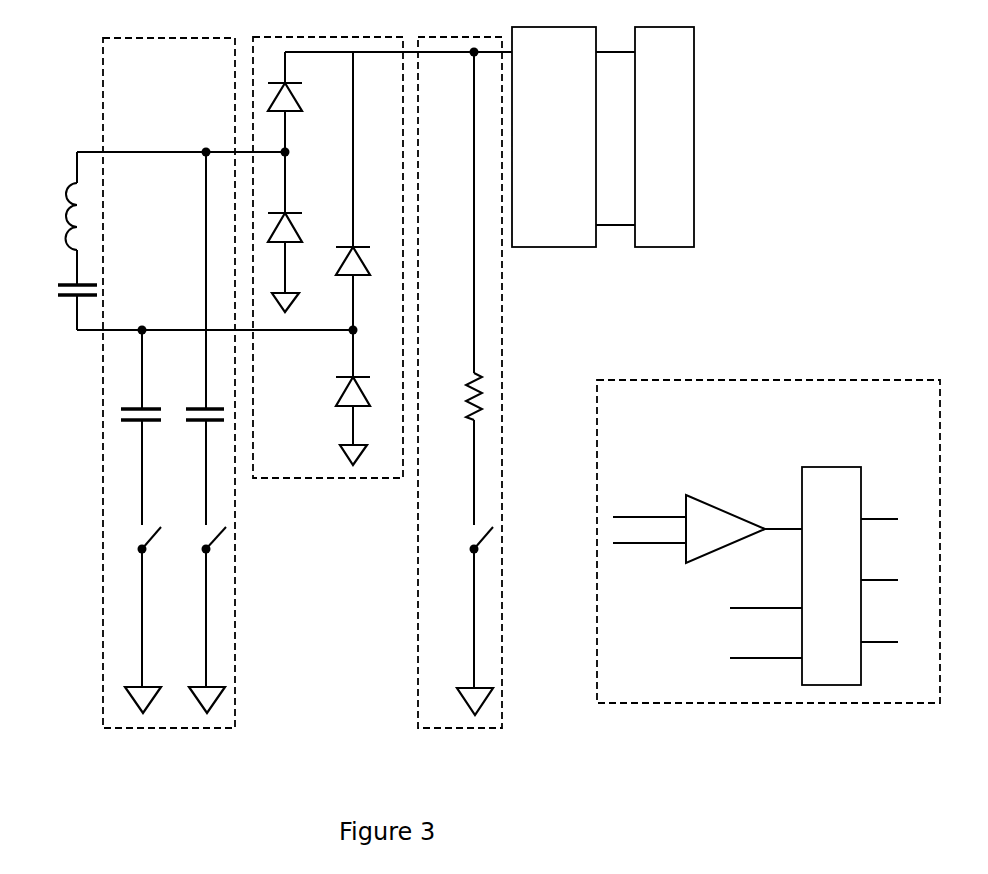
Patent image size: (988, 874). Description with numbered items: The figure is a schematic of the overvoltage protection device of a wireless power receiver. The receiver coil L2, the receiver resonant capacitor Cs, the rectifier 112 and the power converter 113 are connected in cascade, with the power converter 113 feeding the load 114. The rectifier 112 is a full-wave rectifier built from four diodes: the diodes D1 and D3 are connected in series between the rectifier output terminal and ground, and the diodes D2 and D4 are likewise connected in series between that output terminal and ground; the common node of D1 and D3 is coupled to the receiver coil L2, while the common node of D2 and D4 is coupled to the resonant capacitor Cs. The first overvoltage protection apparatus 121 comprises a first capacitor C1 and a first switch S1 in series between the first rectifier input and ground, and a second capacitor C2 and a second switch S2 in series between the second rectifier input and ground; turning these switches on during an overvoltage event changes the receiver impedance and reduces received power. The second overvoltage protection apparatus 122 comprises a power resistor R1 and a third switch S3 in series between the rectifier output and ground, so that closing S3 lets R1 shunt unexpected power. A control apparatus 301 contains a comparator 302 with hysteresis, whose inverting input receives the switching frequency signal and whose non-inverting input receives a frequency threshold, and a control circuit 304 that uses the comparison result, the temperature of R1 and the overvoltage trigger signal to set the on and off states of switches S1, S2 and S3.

The first overvoltage protection apparatus 121 is at (147, 69).
The rectifier 112 is at (299, 475).
The second overvoltage protection apparatus 122 is at (459, 716).
The power converter 113 is at (542, 247).
The load 114 is at (665, 247).
The control apparatus 301 is at (768, 541).
The comparator 302 is at (714, 500).
The control circuit 304 is at (824, 467).
The receiver coil L2 is at (50, 216).
The receiver resonant capacitor Cs is at (62, 291).
The first capacitor C1 is at (136, 401).
The second capacitor C2 is at (197, 401).
The first switch S1 is at (138, 618).
The second switch S2 is at (198, 618).
The third switch S3 is at (466, 619).
The diode D1 is at (300, 97).
The diode D2 is at (366, 261).
The diode D3 is at (299, 262).
The diode D4 is at (366, 421).
The resistor R1 is at (457, 396).